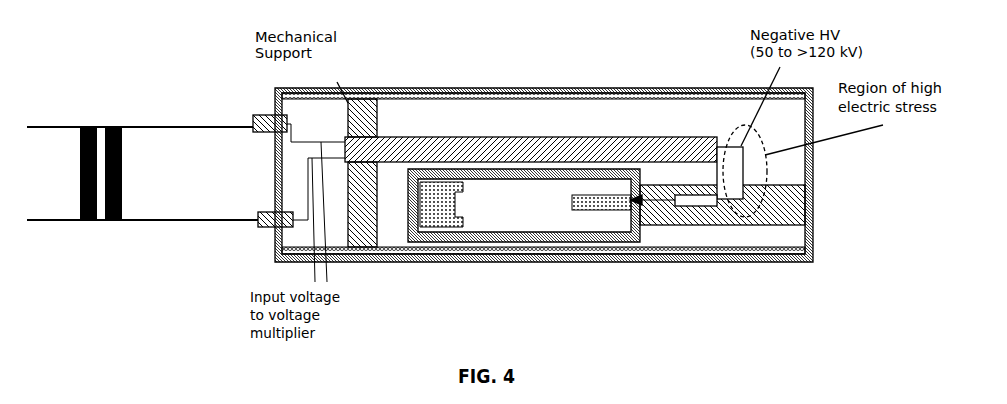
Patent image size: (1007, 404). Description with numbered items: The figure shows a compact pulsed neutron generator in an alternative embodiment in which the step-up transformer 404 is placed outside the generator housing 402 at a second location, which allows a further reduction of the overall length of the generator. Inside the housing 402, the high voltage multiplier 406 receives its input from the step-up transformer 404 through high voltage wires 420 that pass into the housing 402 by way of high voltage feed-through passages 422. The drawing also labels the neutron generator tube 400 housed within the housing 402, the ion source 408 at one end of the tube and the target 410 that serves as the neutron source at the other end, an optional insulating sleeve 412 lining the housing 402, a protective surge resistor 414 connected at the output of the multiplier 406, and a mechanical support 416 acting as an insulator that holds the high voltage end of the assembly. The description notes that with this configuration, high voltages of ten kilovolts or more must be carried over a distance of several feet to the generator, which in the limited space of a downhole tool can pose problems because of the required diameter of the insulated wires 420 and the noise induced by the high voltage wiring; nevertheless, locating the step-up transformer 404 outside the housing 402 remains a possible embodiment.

The neutron generator tube (Minitron) 400 is at (505, 225).
The generator housing 402 is at (455, 262).
The step-up transformer 404 is at (118, 125).
The high voltage multiplier 406 is at (530, 138).
The ion source 408 is at (442, 213).
The target (neutron source) 410 is at (578, 212).
The insulating sleeve (optional) 412 is at (395, 88).
The protective (surge) resistor 414 is at (698, 199).
The mechanical support (insulator) 416 is at (790, 224).
The high voltage wires 420 is at (166, 128).
The high voltage feed-through passages 422 is at (268, 212).